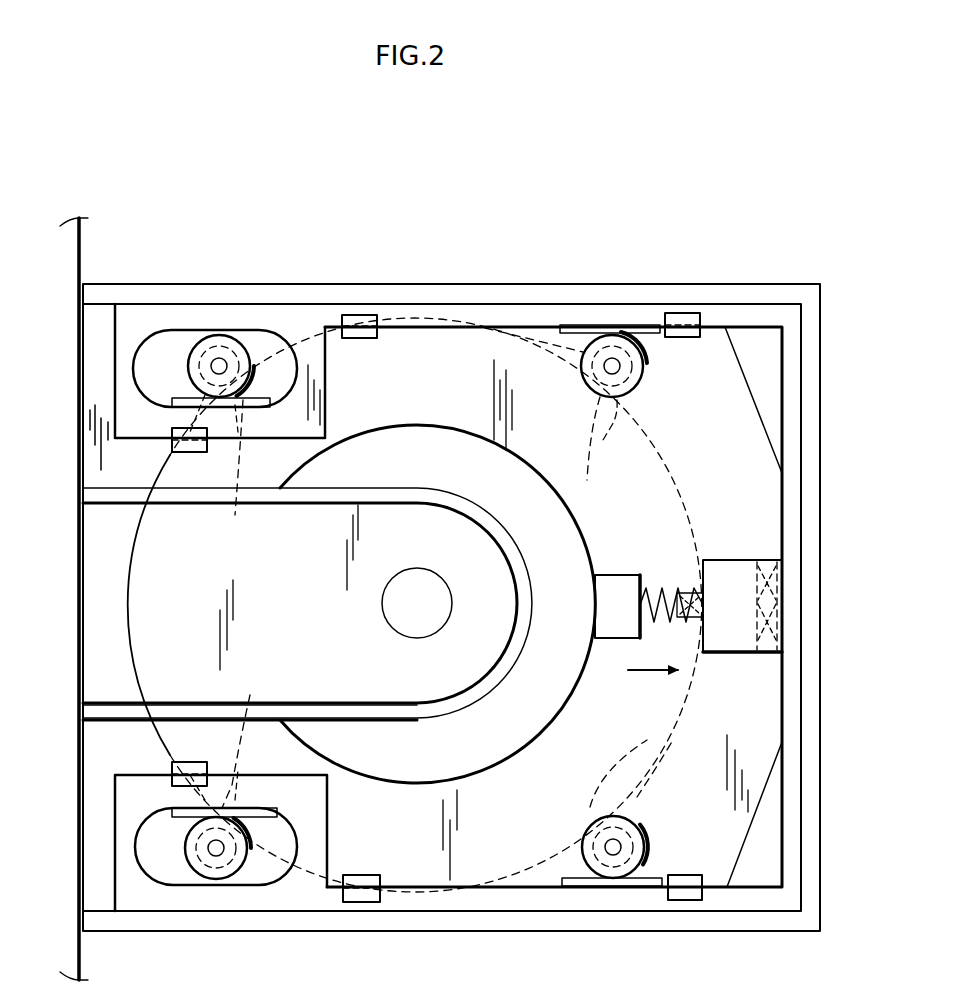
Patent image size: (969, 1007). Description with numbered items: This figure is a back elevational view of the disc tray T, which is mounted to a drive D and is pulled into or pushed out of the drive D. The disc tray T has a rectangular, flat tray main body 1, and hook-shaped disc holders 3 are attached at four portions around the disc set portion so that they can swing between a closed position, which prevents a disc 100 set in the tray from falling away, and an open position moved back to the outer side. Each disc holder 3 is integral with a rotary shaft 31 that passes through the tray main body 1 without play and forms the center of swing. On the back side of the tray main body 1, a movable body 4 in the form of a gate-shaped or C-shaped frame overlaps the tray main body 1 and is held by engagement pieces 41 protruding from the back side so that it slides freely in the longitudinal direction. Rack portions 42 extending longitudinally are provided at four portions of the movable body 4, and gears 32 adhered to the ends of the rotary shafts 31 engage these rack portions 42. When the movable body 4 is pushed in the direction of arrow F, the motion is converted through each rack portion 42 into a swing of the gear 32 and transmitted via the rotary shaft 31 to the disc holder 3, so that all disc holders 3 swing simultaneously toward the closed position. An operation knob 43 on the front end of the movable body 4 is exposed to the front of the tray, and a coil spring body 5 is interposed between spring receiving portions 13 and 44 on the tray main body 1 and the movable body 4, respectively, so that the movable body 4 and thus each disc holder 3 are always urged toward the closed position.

The tray main body 1 is at (430, 284).
The disc holder 3 is at (415, 605).
The movable body 4 is at (502, 318).
The spring body 5 is at (663, 586).
The spring receiving portion 13 is at (620, 575).
The rotary shaft 31 is at (219, 358).
The gear 32 is at (250, 365).
The engagement piece 41 is at (355, 315).
The rack portion 42 is at (270, 408).
The operation knob 43 is at (782, 635).
The spring receiving portion 44 is at (728, 560).
The disc 100 is at (698, 682).
The drive D is at (86, 245).
The disc tray T is at (720, 272).
The arrow F is at (653, 690).